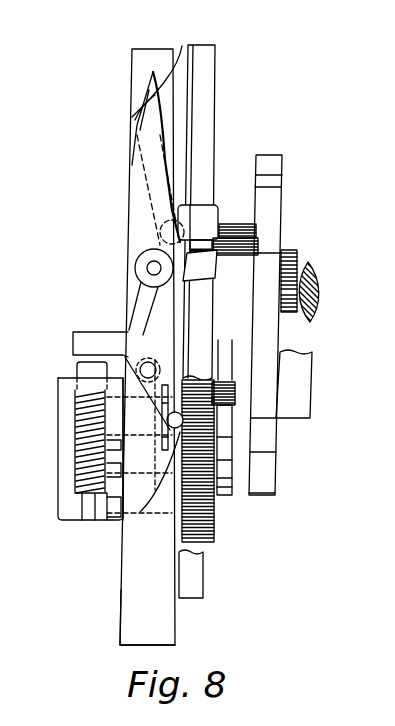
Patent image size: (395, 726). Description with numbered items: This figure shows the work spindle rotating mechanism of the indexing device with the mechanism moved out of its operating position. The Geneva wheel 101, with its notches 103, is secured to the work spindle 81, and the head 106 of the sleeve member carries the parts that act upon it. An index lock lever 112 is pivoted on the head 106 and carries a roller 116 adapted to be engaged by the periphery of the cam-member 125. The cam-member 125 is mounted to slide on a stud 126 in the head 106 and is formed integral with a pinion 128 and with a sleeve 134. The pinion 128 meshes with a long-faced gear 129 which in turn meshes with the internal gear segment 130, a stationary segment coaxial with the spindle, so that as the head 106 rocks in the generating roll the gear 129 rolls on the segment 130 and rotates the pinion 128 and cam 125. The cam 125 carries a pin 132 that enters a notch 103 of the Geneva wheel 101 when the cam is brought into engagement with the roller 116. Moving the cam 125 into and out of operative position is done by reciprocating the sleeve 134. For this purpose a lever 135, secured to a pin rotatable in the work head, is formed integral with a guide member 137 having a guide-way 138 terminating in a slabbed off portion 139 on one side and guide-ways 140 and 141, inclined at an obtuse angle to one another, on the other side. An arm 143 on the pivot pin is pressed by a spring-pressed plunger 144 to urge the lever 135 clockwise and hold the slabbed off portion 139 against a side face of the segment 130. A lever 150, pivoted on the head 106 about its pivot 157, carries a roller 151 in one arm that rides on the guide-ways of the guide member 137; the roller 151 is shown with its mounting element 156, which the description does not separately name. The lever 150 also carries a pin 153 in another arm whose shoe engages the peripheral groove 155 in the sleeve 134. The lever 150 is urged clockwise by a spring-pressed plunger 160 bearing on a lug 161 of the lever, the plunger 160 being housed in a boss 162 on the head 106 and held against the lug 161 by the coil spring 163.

The work spindle 81 is at (318, 284).
The Geneva wheel 101 is at (272, 222).
The notches of Geneva wheel 103 is at (271, 185).
The head of sleeve member 106 is at (133, 614).
The index lock lever 112 is at (296, 405).
The roller 116 is at (262, 420).
The cam-member 125 is at (232, 494).
The stud 126 is at (73, 385).
The pinion 128 is at (212, 338).
The long-faced gear 129 is at (214, 543).
The internal gear segment 130 is at (203, 108).
The pin 132 is at (230, 355).
The sleeve 134 is at (230, 340).
The lever 135 is at (137, 203).
The guide member 137 is at (140, 103).
The guide-way 138 is at (163, 187).
The slabbed off portion 139 is at (182, 46).
The guide-way 140 is at (142, 165).
The guide-way 141 is at (133, 114).
The arm 143 is at (213, 270).
The spring-pressed plunger 144 is at (228, 232).
The lever 150 is at (153, 312).
The roller 151 is at (143, 250).
The pin 153 is at (167, 418).
The peripheral groove 155 is at (140, 512).
The roller pin 156 is at (148, 275).
The pivot 157 is at (163, 350).
The spring-pressed plunger 160 is at (83, 369).
The lug 161 is at (73, 335).
The boss 162 is at (62, 505).
The coil spring 163 is at (72, 462).